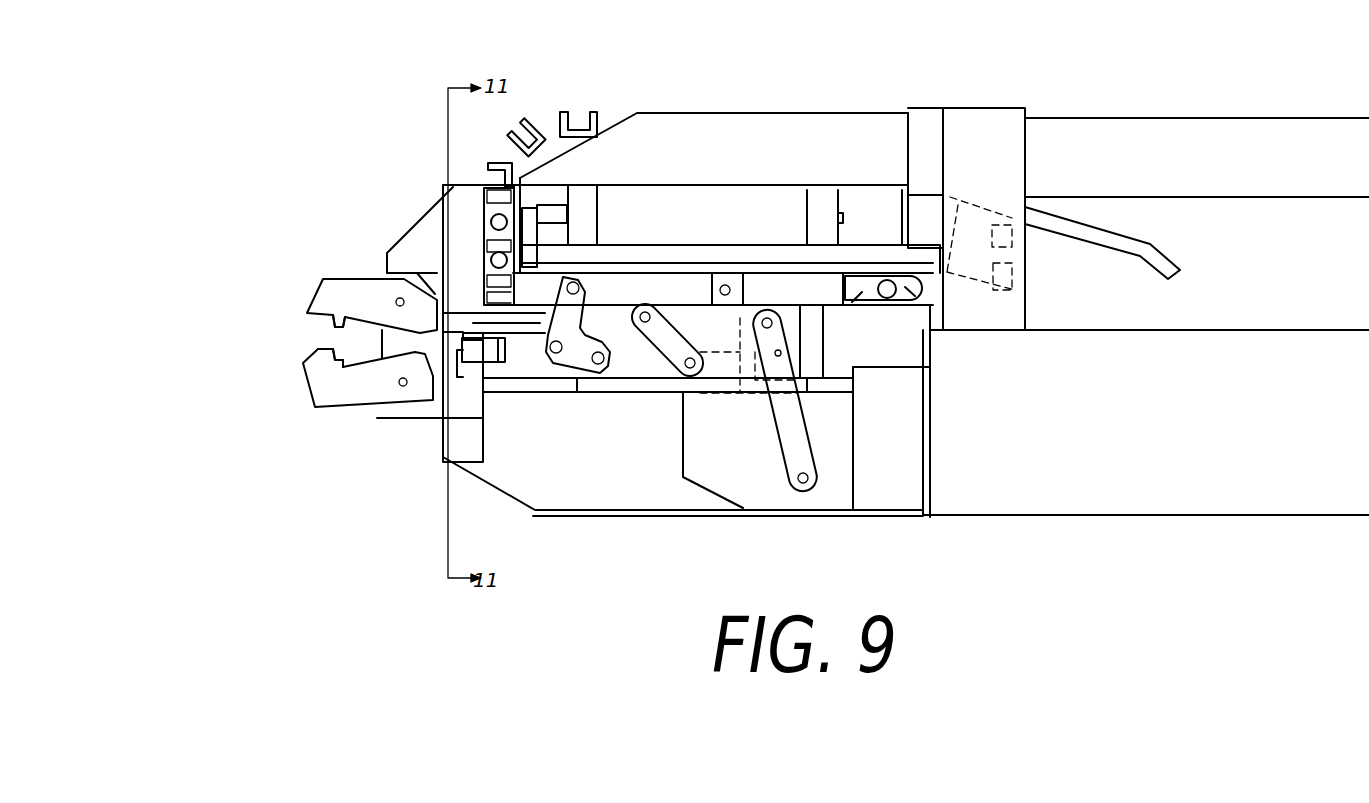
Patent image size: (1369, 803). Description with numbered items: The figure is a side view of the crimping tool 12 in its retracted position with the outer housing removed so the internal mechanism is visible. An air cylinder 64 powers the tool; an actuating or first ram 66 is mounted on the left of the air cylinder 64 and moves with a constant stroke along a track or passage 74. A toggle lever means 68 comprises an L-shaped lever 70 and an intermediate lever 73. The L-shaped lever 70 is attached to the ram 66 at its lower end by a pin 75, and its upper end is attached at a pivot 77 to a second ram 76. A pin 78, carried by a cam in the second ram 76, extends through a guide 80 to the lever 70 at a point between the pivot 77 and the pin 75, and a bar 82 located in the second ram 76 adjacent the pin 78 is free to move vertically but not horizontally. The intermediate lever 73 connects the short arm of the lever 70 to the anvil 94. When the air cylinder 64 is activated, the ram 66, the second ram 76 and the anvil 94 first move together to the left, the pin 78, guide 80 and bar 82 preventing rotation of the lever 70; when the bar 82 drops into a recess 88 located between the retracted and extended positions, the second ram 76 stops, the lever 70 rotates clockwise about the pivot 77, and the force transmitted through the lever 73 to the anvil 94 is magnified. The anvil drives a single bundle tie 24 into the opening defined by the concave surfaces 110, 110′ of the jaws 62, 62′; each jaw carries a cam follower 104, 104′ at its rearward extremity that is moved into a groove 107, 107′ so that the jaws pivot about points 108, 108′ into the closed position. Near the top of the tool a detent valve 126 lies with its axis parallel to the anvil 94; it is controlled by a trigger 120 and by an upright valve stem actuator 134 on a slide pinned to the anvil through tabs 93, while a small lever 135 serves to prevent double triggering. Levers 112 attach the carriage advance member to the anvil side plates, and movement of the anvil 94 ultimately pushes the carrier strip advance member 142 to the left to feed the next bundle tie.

The apparatus 12 is at (966, 20).
The single bundle tie 24 is at (433, 383).
The jaw 62 is at (325, 290).
The jaw 62′ is at (322, 391).
The air cylinder 64 is at (1090, 490).
The actuating ram 66 is at (615, 340).
The toggle lever means 68 is at (803, 318).
The L-shaped lever 70 is at (783, 443).
The intermediate lever 73 is at (647, 355).
The track 74 is at (515, 455).
The pin 75 is at (805, 485).
The second ram 76 is at (845, 303).
The pivot 77 is at (768, 317).
The pin 78 is at (763, 357).
The guide 80 is at (700, 425).
The bar 82 is at (810, 368).
The recess 88 is at (660, 337).
The tab 93 is at (725, 283).
The anvil 94 is at (638, 300).
The cam follower 104 is at (424, 275).
The cam follower 104′ is at (425, 395).
The groove 107 is at (432, 274).
The groove 107′ is at (437, 386).
The pivot point 108 is at (388, 280).
The pivot point 108′ is at (408, 405).
The concave surface 110 is at (330, 325).
The concave surface 110′ is at (333, 349).
The lever 112 is at (555, 323).
The trigger 120 is at (1163, 257).
The detent valve 126 is at (663, 203).
The upright valve stem actuator 134 is at (1007, 265).
The small lever 135 is at (1007, 315).
The carrier strip advance member 142 is at (447, 372).